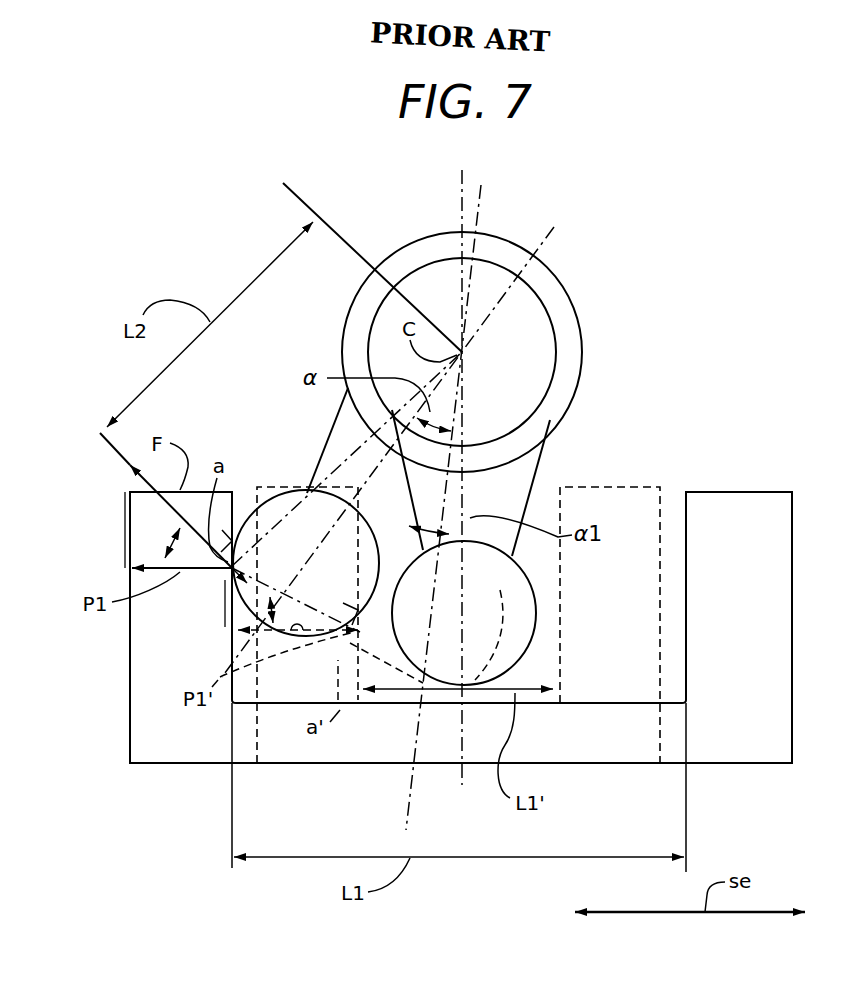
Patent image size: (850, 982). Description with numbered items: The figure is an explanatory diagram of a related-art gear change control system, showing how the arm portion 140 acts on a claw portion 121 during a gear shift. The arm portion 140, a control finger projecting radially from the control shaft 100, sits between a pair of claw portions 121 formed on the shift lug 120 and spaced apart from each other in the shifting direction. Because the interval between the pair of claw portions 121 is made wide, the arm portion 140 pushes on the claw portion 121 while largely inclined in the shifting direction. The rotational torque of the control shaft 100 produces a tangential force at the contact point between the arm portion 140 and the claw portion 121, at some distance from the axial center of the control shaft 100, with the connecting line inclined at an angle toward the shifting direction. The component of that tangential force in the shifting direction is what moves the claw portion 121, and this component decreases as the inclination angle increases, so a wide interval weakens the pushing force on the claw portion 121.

The shift shaft 100 is at (523, 377).
The arm portion 140 is at (525, 490).
The shift lug 120 is at (695, 742).
The claw portion 121 is at (740, 563).